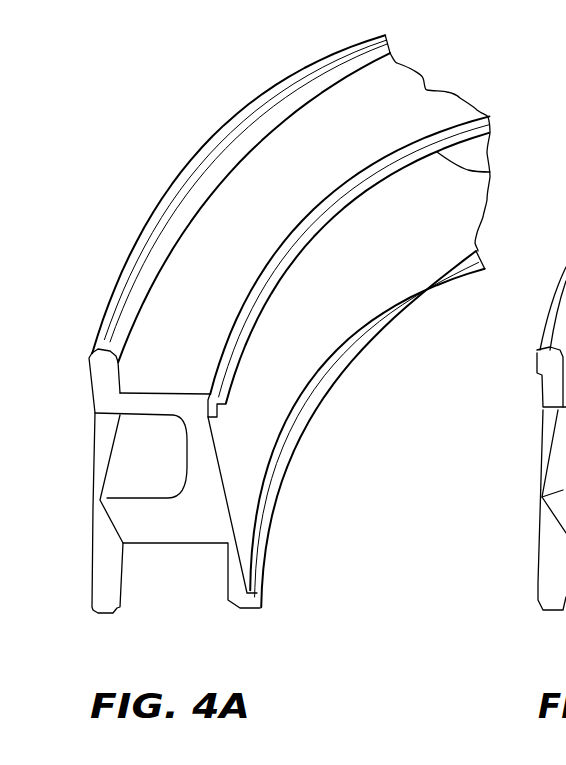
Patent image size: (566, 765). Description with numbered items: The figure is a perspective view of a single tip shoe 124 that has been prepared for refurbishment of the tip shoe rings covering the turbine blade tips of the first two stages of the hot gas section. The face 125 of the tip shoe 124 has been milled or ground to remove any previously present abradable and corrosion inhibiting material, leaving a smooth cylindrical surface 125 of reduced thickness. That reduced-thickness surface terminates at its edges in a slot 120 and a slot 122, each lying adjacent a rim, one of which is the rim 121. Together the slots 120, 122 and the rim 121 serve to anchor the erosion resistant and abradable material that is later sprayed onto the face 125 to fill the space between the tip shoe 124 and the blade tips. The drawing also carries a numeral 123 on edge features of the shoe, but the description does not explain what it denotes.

The slot 120 is at (292, 440).
The rim 121 is at (343, 372).
The slot 122 is at (492, 172).
The lip 123 is at (370, 167).
The tip shoe 124 is at (157, 188).
The face 125 is at (363, 295).